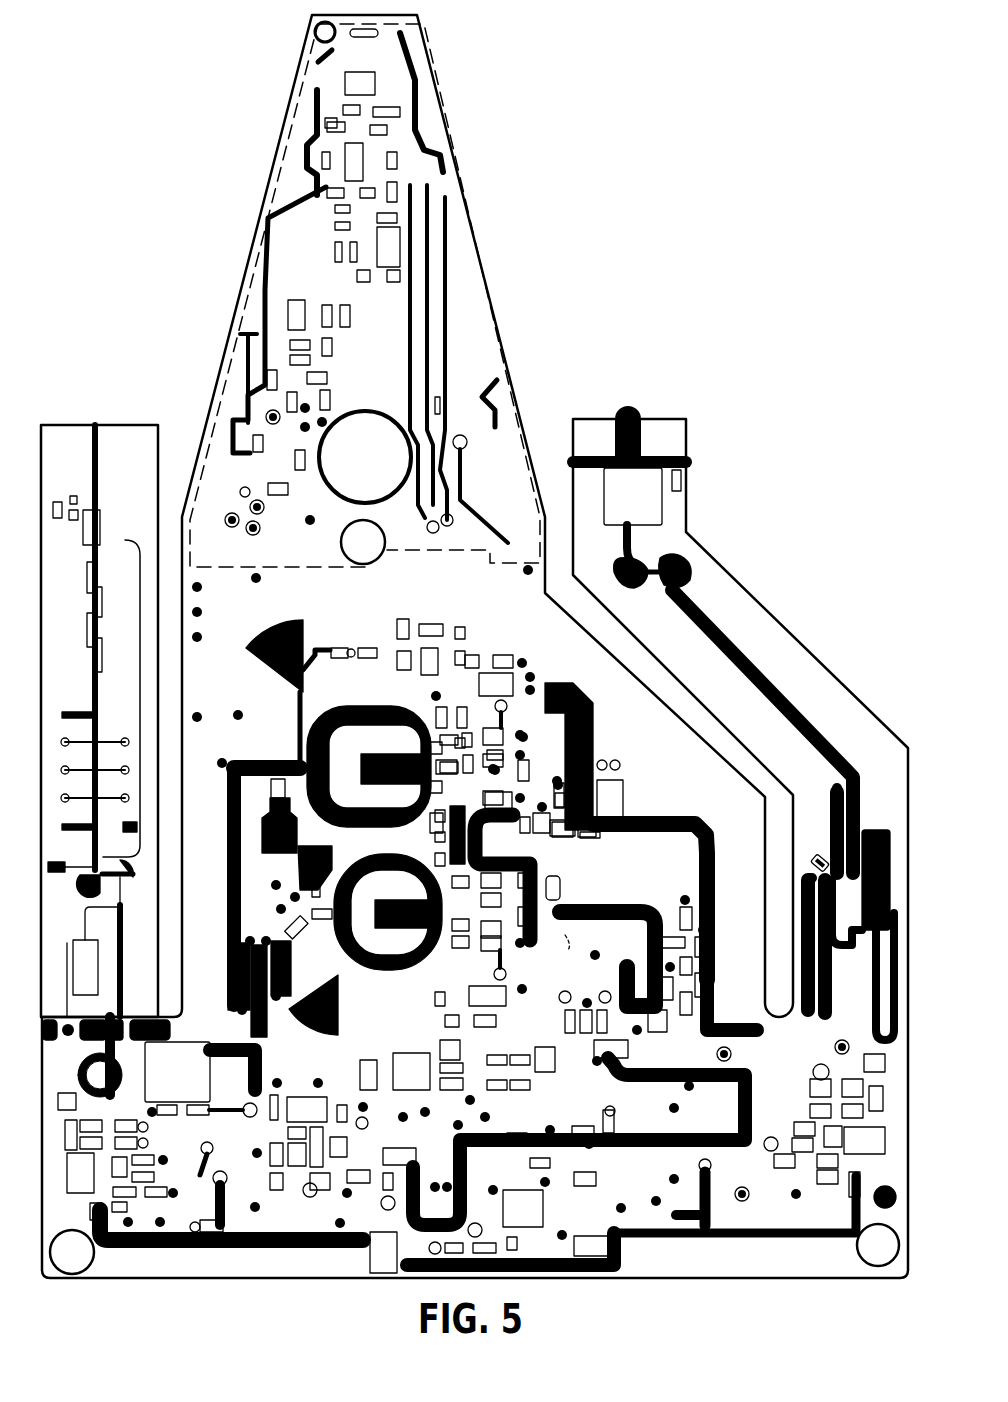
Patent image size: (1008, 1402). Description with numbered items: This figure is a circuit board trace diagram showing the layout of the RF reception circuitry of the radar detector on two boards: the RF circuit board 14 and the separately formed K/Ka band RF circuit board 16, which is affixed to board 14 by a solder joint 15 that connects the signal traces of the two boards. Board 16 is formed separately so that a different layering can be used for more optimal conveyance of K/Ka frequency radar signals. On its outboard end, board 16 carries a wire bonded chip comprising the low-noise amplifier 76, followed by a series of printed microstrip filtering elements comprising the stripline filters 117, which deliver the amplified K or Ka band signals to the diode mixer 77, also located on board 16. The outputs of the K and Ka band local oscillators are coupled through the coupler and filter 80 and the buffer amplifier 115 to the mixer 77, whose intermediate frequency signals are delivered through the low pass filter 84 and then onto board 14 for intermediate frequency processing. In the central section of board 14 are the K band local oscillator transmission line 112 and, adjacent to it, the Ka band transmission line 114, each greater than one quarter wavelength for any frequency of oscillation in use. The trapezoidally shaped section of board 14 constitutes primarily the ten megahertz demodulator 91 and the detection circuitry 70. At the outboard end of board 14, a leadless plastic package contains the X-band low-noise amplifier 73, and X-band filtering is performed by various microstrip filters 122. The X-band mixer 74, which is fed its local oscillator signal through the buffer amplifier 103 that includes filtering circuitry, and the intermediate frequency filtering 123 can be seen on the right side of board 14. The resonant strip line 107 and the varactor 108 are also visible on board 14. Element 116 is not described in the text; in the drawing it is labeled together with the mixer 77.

The RF circuit board 14 is at (328, 1290).
The solder joint 15 is at (145, 1017).
The K/Ka band RF circuit board 16 is at (157, 693).
The detection circuitry 70 is at (504, 272).
The low-noise amplifier 73 is at (640, 508).
The X-band mixer 74 is at (760, 844).
The low-noise amplifier 76 is at (100, 525).
The mixer 77 is at (188, 804).
The coupler and filter 80 is at (233, 957).
The low pass filter 84 is at (90, 963).
The 10 MHz demodulator 91 is at (376, 294).
The buffer amplifier 103 is at (815, 862).
The resonant strip line 107 is at (597, 950).
The varactor 108 is at (560, 886).
The K band local oscillator transmission line 112 is at (384, 711).
The Ka band transmission line 114 is at (387, 854).
The buffer amplifier 115 is at (190, 1087).
The feed conductor 116 is at (103, 873).
The stripline filters 117 is at (143, 695).
The microstrip filters 122 is at (780, 689).
The intermediate frequency filtering 123 is at (887, 983).